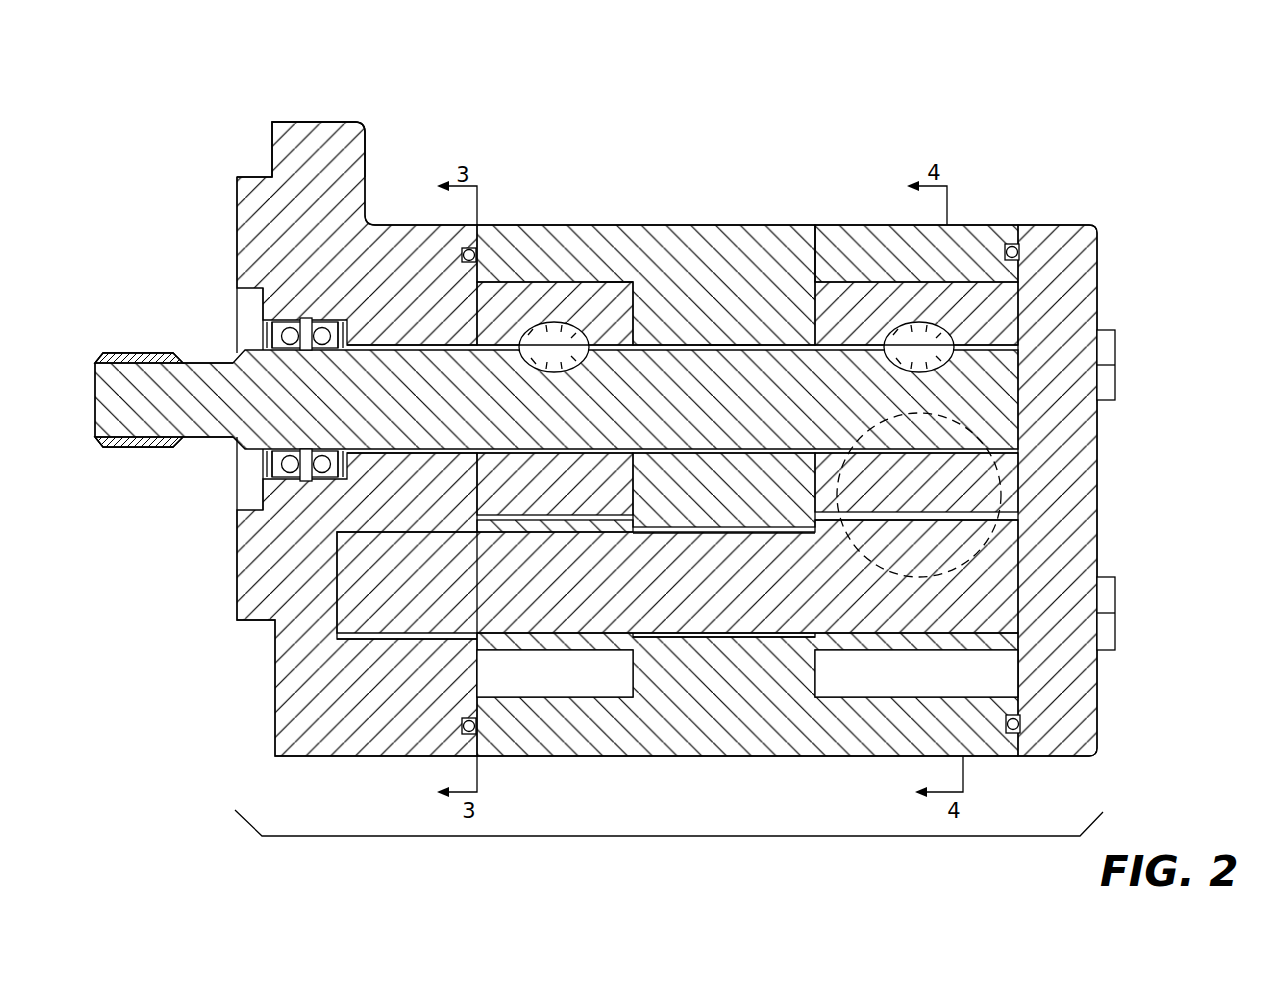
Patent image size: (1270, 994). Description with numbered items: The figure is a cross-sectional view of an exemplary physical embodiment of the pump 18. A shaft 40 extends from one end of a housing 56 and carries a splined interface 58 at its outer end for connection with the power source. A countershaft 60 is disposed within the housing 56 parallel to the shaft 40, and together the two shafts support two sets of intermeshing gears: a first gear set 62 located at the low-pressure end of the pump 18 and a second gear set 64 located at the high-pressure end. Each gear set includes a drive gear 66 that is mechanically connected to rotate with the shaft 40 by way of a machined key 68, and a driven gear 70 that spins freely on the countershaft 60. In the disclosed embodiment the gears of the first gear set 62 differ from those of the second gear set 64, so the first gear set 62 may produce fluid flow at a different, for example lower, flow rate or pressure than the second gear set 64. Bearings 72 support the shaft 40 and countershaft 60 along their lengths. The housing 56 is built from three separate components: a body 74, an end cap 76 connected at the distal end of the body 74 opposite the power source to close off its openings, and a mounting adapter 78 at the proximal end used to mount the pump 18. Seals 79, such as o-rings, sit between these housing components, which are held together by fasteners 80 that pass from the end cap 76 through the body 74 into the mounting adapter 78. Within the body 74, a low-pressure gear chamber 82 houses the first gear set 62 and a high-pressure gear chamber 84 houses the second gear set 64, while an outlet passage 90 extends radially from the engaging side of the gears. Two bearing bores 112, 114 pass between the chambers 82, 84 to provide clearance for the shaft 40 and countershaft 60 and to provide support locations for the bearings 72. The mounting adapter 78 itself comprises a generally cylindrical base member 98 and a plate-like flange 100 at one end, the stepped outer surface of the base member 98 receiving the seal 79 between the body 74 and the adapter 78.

The pump 18 is at (962, 92).
The shaft 40 is at (634, 418).
The housing 56 is at (695, 838).
The splined interface 58 is at (137, 447).
The countershaft 60 is at (706, 593).
The first gear set 62 is at (898, 255).
The second gear set 64 is at (581, 247).
The drive gear 66 is at (491, 325).
The machined key 68 is at (541, 359).
The driven gear 70 is at (506, 652).
The bearing 72 is at (292, 327).
The body 74 is at (740, 710).
The end cap 76 is at (1046, 740).
The mounting adapter 78 is at (378, 710).
The seal 79 is at (467, 248).
The fastener 80 is at (1117, 345).
The low-pressure gear chamber 82 is at (817, 276).
The high-pressure gear chamber 84 is at (611, 282).
The outlet passage 90 is at (1001, 492).
The base member 98 is at (415, 240).
The flange 100 is at (297, 122).
The bearing bore 112 is at (712, 528).
The bearing bore 114 is at (721, 345).